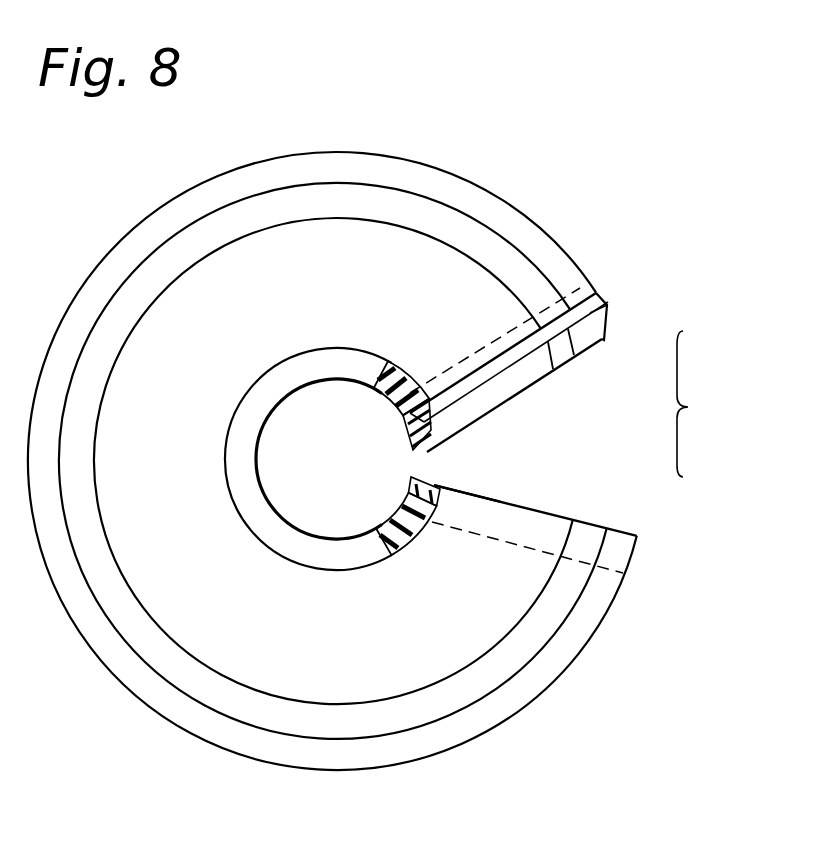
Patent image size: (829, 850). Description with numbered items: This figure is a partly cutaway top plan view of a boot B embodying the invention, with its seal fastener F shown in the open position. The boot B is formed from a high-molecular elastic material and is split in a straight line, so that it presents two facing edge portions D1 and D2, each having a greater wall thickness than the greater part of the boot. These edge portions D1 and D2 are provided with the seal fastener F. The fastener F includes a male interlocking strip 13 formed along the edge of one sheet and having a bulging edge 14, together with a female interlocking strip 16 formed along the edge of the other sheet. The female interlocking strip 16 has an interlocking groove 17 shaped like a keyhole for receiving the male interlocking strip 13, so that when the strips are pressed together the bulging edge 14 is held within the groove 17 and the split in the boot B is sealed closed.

The boot B is at (445, 170).
The male interlocking strip 13 is at (602, 340).
The bulging edge 14 is at (492, 392).
The female interlocking strip 16 is at (577, 546).
The interlocking groove 17 is at (420, 484).
The edge portion D1 is at (394, 410).
The edge portion D2 is at (392, 512).
The seal fastener F is at (692, 404).